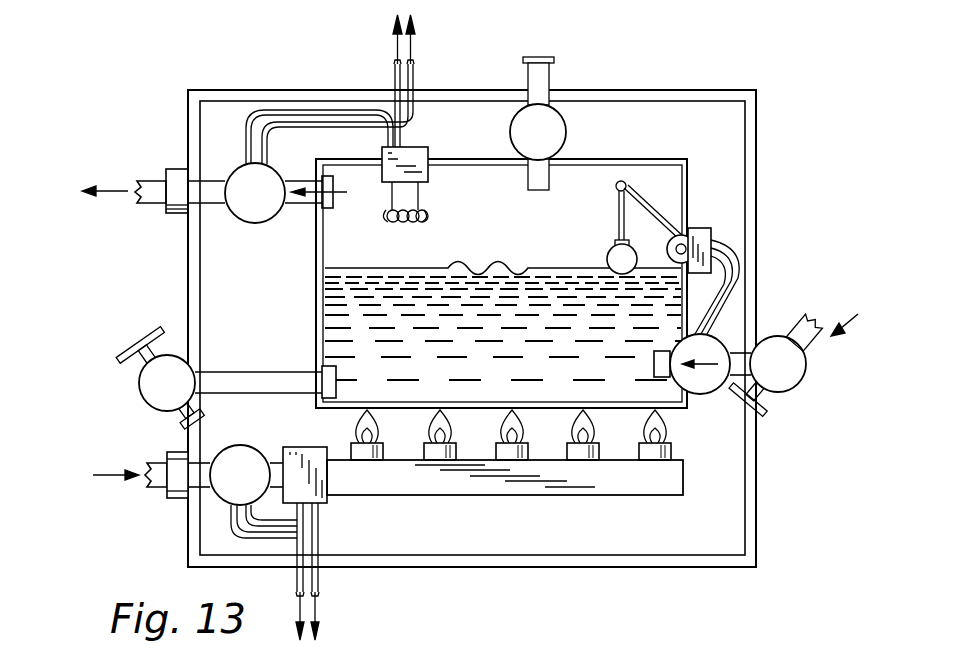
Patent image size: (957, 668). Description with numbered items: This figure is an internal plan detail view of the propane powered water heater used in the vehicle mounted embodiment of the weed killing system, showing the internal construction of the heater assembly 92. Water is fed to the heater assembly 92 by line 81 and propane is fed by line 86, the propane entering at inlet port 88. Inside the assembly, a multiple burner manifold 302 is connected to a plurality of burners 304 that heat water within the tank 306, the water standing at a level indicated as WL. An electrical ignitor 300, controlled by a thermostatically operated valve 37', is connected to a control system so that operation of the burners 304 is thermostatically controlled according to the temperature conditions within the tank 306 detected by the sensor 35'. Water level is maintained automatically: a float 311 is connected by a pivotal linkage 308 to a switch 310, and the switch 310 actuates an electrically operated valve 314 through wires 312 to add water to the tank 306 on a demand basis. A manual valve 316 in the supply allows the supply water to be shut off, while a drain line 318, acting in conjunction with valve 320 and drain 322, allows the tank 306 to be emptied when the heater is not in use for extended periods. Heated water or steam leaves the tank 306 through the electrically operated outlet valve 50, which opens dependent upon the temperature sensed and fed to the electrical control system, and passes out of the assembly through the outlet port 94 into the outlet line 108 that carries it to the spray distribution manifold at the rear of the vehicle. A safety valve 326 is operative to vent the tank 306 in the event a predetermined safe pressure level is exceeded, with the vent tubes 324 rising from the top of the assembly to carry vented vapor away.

The heater assembly 92 is at (757, 498).
The tank 306 is at (315, 325).
The water level WL is at (405, 268).
The outlet line 108 is at (152, 183).
The outlet port 94 is at (180, 172).
The thermostatic steam valve 50 is at (262, 225).
The vent tubes 324 is at (395, 78).
The sensor 35' is at (442, 190).
The safety valve 326 is at (532, 106).
The pivotal linkage 308 is at (626, 184).
The float 311 is at (608, 256).
The switch 310 is at (712, 232).
The wires 312 is at (738, 268).
The electrically operated valve 314 is at (703, 395).
The manual valve 316 is at (804, 390).
The line 81 is at (812, 335).
The valve 320 is at (152, 368).
The drain 322 is at (148, 395).
The drain line 318 is at (287, 378).
The line 86 is at (160, 458).
The inlet port 88 is at (163, 492).
The thermostatic gas valve 37' is at (231, 509).
The electrical ignitor 300 is at (330, 505).
The burners 304 is at (320, 582).
The multiple burner manifold 302 is at (497, 487).